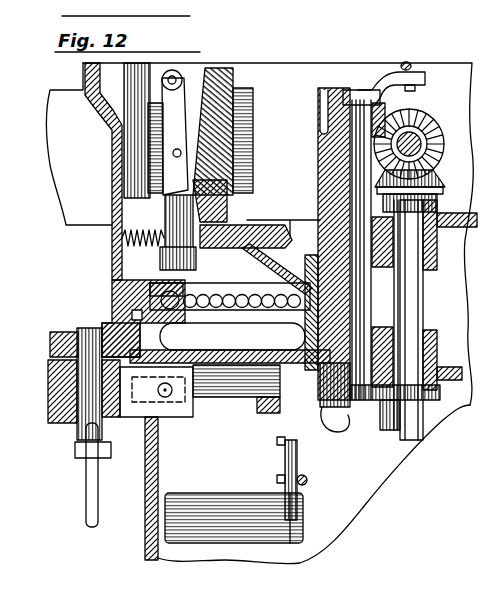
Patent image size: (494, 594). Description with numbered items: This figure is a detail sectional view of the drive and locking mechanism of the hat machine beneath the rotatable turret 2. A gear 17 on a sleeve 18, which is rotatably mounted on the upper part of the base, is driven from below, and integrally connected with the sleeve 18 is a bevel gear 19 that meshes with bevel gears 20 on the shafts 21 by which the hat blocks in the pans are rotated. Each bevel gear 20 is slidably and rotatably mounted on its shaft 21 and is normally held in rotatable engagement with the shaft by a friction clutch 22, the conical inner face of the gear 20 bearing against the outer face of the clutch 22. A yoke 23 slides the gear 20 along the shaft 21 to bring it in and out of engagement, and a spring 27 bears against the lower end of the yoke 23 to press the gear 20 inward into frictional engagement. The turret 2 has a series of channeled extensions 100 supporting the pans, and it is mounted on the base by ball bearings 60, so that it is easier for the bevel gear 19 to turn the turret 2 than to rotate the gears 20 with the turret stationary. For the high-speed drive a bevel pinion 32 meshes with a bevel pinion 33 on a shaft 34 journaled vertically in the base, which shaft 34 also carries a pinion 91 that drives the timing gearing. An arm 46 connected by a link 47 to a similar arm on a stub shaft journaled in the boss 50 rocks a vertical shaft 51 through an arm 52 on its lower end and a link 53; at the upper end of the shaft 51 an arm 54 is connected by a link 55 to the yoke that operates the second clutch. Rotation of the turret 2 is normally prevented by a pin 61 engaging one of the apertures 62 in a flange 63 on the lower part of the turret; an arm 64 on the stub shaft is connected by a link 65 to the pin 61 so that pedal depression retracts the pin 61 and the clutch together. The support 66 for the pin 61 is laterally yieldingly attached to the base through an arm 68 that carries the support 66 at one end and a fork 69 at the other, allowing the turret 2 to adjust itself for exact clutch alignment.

The turret 2 is at (112, 205).
The gear 17 is at (262, 330).
The sleeve 18 is at (62, 330).
The bevel gear 19 is at (270, 222).
The bevel gear 20 is at (238, 124).
The shaft 21 is at (120, 238).
The friction clutch 22 is at (240, 172).
The yoke 23 is at (168, 130).
The spring 27 is at (140, 247).
The bevel pinion 32 is at (425, 137).
The bevel pinion 33 is at (440, 190).
The shaft 34 is at (415, 293).
The arm 46 is at (283, 470).
The link 47 is at (308, 481).
The boss 50 is at (237, 522).
The vertical shaft 51 is at (370, 338).
The arm 52 is at (349, 409).
The link 53 is at (312, 440).
The arm 54 is at (372, 90).
The link 55 is at (408, 64).
The ball bearings 60 is at (232, 306).
The pin 61 is at (80, 455).
The apertures 62 is at (89, 370).
The flange 63 is at (61, 271).
The arm 64 is at (100, 540).
The link 65 is at (88, 490).
The support 66 is at (72, 420).
The arm 68 is at (230, 398).
The fork 69 is at (280, 443).
The pinion 91 is at (444, 418).
The channeled extension 100 is at (140, 135).